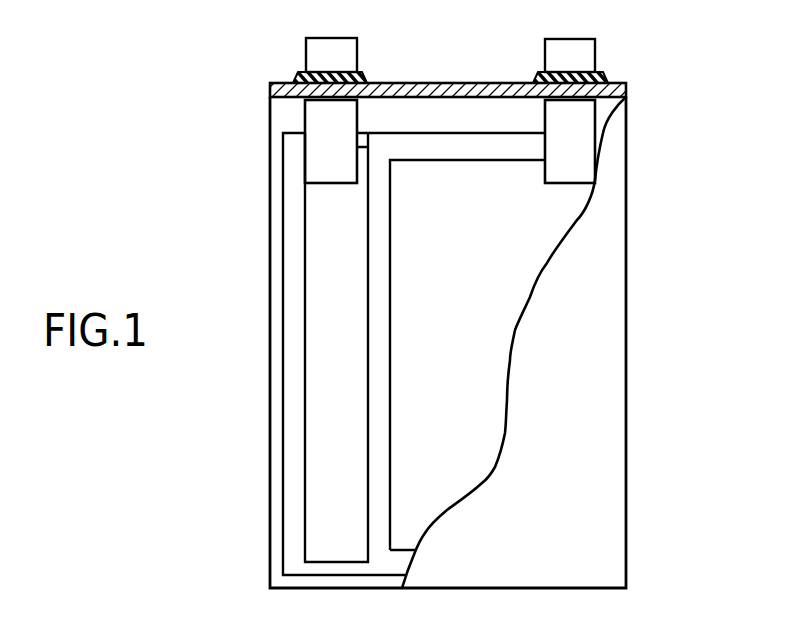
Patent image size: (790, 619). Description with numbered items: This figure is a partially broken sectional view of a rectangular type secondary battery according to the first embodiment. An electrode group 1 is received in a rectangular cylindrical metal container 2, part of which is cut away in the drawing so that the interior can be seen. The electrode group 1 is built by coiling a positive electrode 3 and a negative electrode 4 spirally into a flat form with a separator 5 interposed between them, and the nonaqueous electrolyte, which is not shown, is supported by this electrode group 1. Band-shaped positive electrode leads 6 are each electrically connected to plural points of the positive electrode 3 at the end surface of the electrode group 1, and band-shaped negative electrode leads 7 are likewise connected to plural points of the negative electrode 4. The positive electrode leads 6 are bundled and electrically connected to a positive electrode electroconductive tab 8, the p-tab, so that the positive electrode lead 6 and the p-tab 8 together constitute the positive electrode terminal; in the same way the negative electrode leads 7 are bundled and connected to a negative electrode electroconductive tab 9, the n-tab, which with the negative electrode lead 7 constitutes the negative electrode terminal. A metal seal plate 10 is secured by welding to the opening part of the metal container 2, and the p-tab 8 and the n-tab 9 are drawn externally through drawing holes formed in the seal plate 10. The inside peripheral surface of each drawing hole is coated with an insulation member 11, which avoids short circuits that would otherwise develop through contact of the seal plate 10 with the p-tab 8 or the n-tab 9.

The electrode group 1 is at (447, 294).
The rectangular cylindrical metal container 2 is at (610, 443).
The positive electrode 3 is at (315, 313).
The negative electrode 4 is at (432, 199).
The separator 5 is at (378, 418).
The positive electrode lead 6 is at (312, 120).
The negative electrode lead 7 is at (583, 130).
The positive electrode electroconductive tab 8 is at (327, 47).
The negative electrode electroconductive tab 9 is at (575, 48).
The metal seal plate 10 is at (284, 81).
The insulation member 11 is at (363, 73).